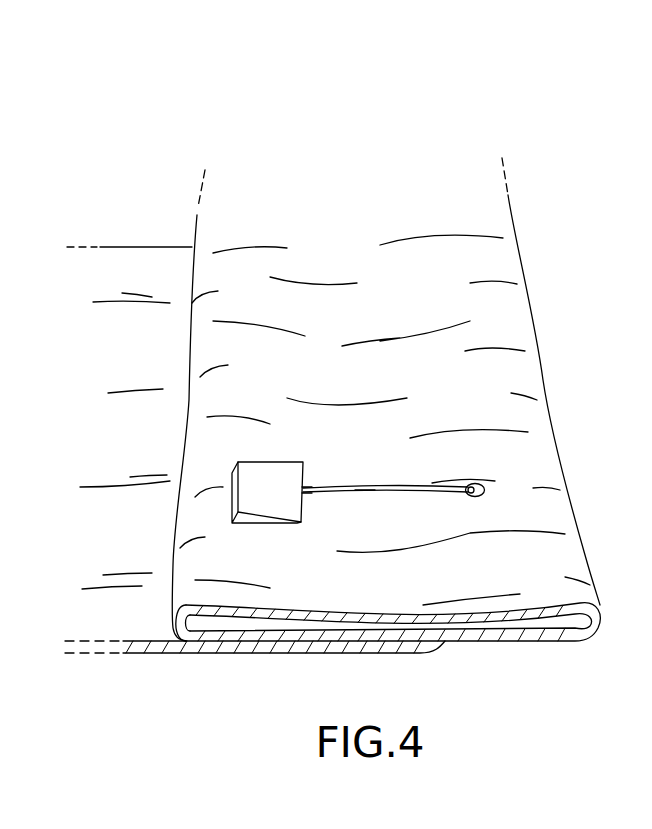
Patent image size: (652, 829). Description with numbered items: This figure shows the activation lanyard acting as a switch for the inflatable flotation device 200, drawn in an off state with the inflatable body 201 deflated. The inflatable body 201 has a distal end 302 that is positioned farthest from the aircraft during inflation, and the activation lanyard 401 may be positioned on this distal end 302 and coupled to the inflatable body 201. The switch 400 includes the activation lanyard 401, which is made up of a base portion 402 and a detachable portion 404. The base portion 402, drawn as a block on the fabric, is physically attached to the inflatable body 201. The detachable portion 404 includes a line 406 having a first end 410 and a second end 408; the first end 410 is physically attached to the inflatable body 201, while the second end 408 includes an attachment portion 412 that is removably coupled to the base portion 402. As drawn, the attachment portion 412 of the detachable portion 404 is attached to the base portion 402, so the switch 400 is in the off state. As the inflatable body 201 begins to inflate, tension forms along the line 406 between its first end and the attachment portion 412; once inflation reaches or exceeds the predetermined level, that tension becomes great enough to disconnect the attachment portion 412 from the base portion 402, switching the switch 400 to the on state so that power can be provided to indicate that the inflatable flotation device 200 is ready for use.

The inflatable flotation device 200 is at (345, 96).
The inflatable body 201 is at (507, 252).
The distal end 302 is at (433, 190).
The switch 400 is at (367, 395).
The activation lanyard 401 is at (424, 421).
The base portion 402 is at (268, 523).
The detachable portion 404 is at (392, 486).
The line 406 is at (365, 494).
The second end 408 is at (304, 488).
The first end 410 is at (466, 482).
The attachment portion 412 is at (303, 494).